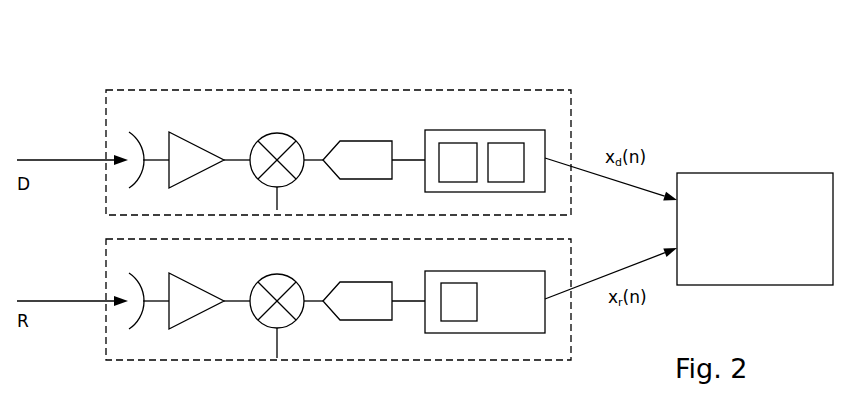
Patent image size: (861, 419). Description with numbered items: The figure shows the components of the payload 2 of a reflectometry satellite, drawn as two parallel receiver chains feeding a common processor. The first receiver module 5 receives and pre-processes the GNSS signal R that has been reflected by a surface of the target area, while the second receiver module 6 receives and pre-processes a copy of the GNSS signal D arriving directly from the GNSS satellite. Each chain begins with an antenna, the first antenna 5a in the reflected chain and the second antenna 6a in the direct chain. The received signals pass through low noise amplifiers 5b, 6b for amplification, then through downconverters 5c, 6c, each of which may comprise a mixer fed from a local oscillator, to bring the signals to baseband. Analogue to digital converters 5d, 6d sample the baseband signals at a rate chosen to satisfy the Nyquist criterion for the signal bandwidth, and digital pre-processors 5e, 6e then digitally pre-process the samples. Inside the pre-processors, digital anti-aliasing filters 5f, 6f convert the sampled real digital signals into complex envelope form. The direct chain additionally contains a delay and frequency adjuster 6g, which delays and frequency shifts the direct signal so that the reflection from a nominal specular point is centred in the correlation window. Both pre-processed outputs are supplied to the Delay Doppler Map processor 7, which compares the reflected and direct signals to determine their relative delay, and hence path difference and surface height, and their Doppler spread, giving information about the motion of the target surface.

The receiver system 2 is at (668, 63).
The first receiver module 5 is at (338, 318).
The first antenna 5a is at (134, 288).
The low noise amplifier 5b is at (196, 292).
The downconverter 5c is at (277, 302).
The analogue to digital converter 5d is at (357, 288).
The digital pre-processor 5e is at (473, 293).
The digital anti-aliasing filter 5f is at (459, 302).
The second receiver module 6 is at (338, 134).
The second antenna 6a is at (133, 147).
The low noise amplifier 6b is at (196, 151).
The downconverter 6c is at (272, 158).
The analogue to digital converter 6d is at (357, 147).
The digital pre-processor 6e is at (481, 151).
The digital anti-aliasing filter 6f is at (458, 162).
The delay and frequency adjuster 6g is at (506, 162).
The Delay Doppler Map processor 7 is at (755, 229).